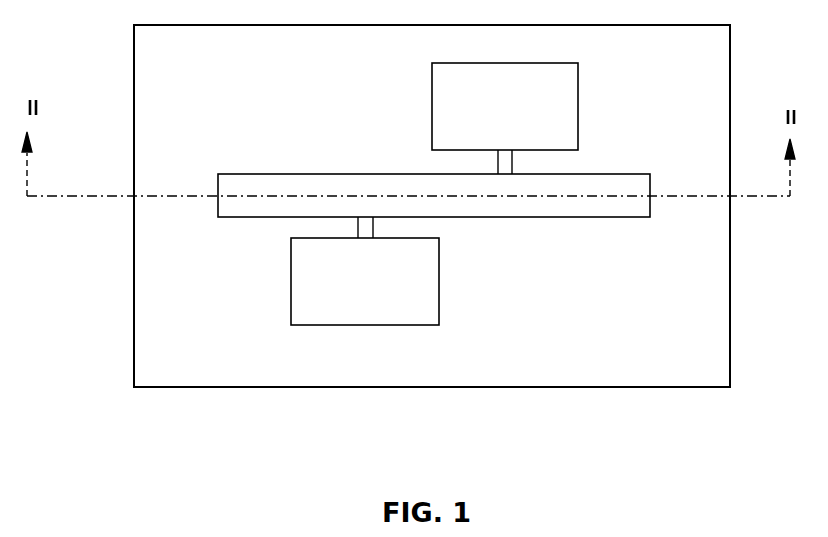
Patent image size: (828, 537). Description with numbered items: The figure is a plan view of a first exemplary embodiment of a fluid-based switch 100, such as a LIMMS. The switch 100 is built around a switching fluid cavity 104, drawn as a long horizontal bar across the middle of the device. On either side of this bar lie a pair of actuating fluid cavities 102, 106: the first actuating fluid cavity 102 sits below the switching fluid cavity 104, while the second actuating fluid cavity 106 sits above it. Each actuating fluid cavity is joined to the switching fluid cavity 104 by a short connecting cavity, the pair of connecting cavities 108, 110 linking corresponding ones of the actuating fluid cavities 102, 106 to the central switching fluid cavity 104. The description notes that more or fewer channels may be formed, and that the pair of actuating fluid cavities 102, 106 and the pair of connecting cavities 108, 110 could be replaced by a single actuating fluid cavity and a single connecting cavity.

The switch 100 is at (704, 362).
The actuating fluid cavity 102 is at (427, 316).
The switching fluid cavity 104 is at (603, 166).
The actuating fluid cavity 106 is at (567, 141).
The connecting cavity 108 is at (357, 224).
The connecting cavity 110 is at (497, 156).